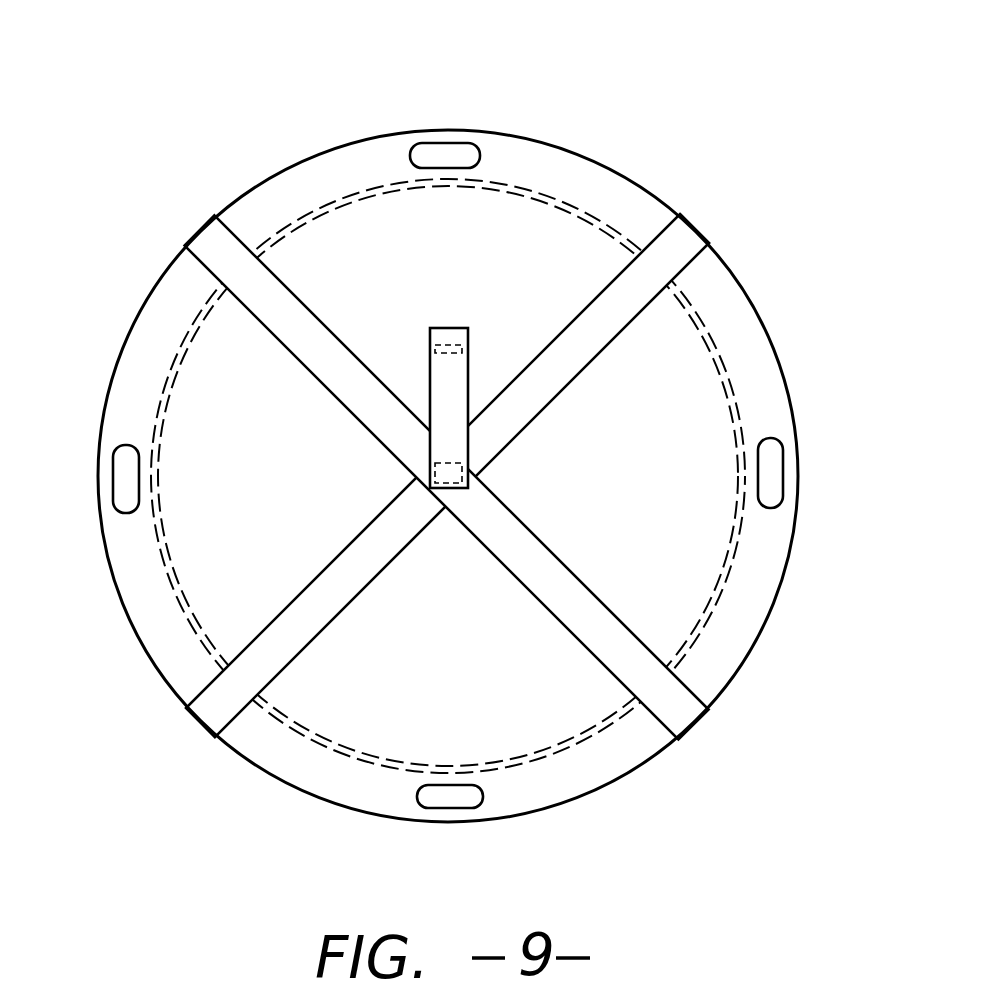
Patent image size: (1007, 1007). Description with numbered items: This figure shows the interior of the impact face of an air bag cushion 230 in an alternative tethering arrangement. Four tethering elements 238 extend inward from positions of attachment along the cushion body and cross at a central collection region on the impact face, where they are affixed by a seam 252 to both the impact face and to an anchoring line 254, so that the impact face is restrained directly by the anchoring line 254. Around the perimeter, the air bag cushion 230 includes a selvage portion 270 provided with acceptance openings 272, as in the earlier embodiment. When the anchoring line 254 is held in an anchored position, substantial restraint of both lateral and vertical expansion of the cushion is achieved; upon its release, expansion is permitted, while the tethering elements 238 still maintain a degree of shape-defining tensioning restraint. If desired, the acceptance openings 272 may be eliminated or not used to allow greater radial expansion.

The air bag cushion 230 is at (448, 422).
The tethering elements 238 is at (283, 280).
The seam 252 is at (470, 462).
The anchoring line 254 is at (430, 343).
The selvage portion 270 is at (723, 317).
The acceptance openings 272 is at (478, 152).